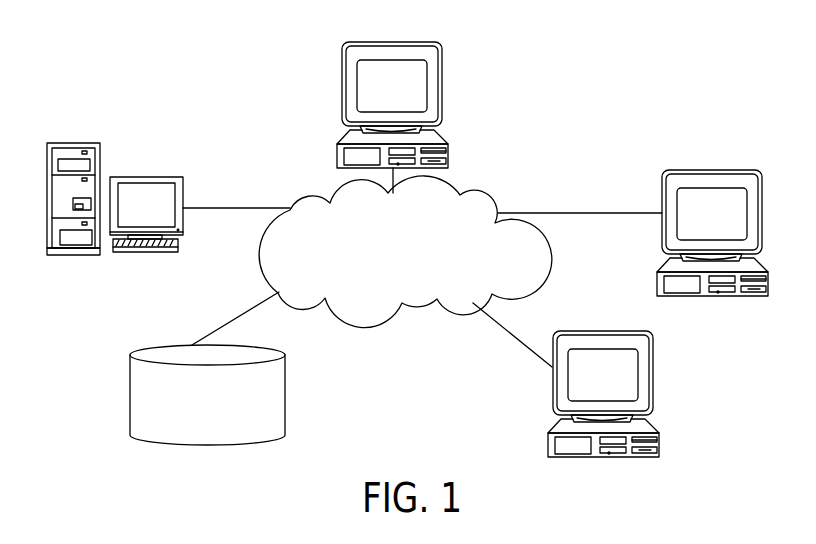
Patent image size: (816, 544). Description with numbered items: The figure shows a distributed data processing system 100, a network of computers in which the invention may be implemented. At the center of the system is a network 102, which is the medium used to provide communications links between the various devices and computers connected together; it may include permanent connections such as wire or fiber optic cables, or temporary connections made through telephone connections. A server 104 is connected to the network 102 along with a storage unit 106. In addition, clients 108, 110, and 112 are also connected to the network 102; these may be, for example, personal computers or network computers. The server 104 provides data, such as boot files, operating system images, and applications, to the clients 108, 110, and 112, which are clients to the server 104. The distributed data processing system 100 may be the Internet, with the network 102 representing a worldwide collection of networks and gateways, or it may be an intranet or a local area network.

The distributed data processing system 100 is at (274, 74).
The network 102 is at (378, 276).
The server 104 is at (140, 177).
The storage unit 106 is at (286, 408).
The client 108 is at (372, 101).
The client 110 is at (691, 229).
The client 112 is at (584, 390).